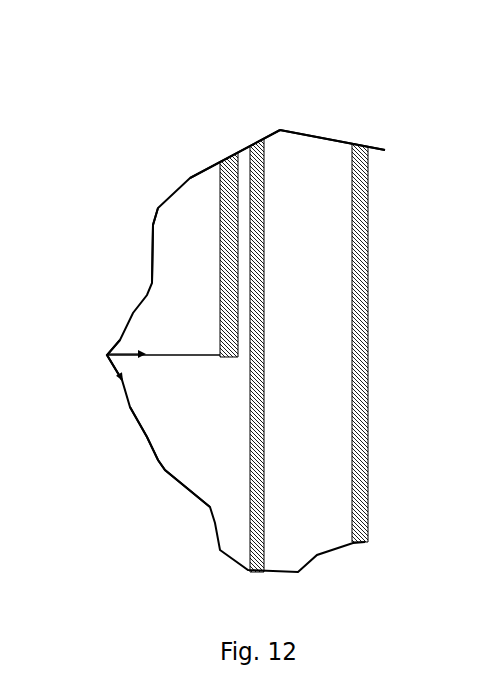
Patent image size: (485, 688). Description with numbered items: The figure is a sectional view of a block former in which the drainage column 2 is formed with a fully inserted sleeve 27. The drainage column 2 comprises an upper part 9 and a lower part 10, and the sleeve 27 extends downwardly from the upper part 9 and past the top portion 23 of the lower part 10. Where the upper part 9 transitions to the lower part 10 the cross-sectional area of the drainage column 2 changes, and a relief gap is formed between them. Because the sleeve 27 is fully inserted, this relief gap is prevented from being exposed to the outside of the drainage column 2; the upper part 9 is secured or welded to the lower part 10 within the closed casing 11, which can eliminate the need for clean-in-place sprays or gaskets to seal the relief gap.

The drainage column 2 is at (186, 122).
The fully inserted sleeve 27 is at (242, 205).
The upper part 9 is at (158, 249).
The closed casing 11 is at (303, 353).
The lower part 10 is at (200, 482).
The top portion 23 is at (116, 379).